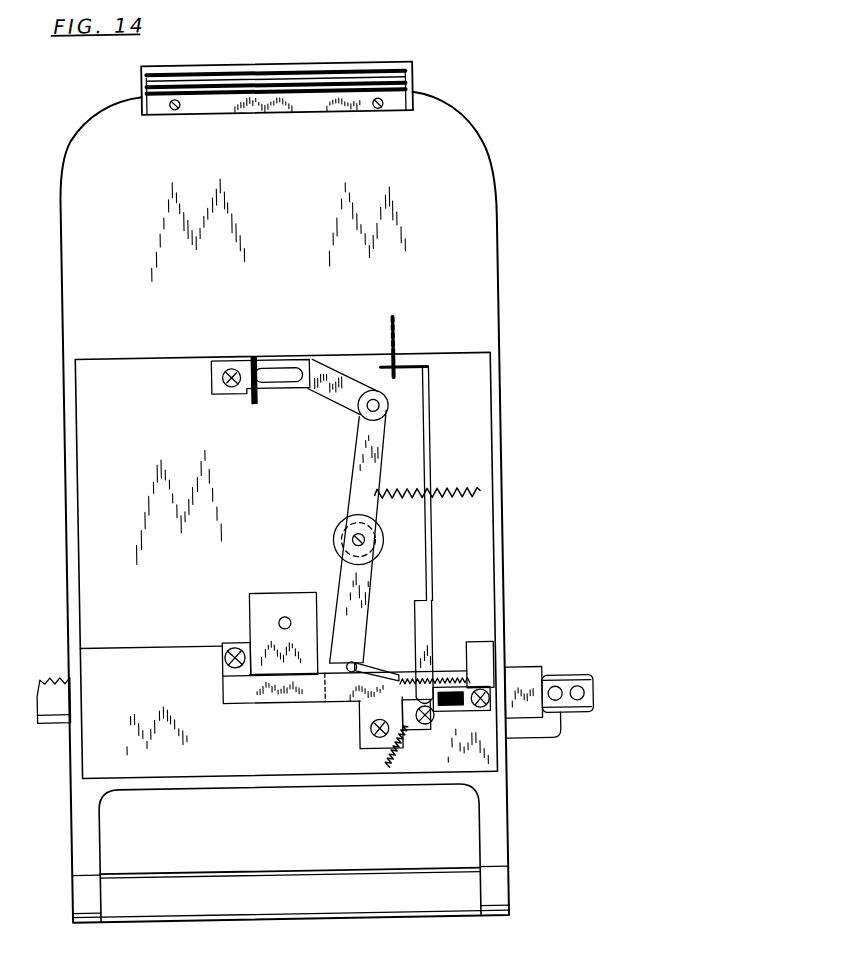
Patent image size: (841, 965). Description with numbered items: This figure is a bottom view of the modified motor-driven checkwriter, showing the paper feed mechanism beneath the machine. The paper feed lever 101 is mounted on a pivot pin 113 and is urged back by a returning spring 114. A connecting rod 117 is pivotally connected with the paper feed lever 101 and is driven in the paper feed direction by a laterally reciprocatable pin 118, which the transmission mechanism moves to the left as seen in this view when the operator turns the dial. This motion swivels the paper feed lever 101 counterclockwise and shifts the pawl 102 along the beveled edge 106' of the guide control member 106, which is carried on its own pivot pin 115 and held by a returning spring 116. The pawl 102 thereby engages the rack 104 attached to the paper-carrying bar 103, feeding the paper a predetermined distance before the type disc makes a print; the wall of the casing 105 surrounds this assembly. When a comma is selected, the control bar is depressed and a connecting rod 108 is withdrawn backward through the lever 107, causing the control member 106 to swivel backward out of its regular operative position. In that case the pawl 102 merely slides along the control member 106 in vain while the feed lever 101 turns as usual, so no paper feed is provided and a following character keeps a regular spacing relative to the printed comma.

The paper feed lever 101 is at (360, 586).
The pawl 102 is at (398, 655).
The paper-carrying bar 103 is at (530, 672).
The rack 104 is at (447, 676).
The casing panel 105 is at (497, 484).
The guide control member 106 is at (345, 709).
The beveled edge 106' is at (390, 714).
The lever 107 is at (398, 364).
The connecting rod 108 is at (428, 536).
The pivot pin 113 is at (361, 544).
The returning spring 114 is at (473, 481).
The pivot pin 115 is at (218, 668).
The returning spring 116 is at (402, 757).
The connecting rod 117 is at (330, 391).
The laterally reciprocatable pin 118 is at (255, 402).